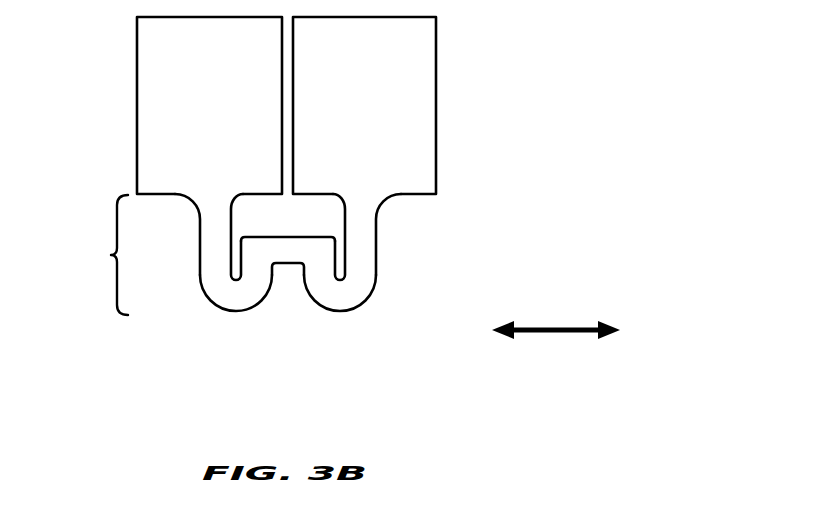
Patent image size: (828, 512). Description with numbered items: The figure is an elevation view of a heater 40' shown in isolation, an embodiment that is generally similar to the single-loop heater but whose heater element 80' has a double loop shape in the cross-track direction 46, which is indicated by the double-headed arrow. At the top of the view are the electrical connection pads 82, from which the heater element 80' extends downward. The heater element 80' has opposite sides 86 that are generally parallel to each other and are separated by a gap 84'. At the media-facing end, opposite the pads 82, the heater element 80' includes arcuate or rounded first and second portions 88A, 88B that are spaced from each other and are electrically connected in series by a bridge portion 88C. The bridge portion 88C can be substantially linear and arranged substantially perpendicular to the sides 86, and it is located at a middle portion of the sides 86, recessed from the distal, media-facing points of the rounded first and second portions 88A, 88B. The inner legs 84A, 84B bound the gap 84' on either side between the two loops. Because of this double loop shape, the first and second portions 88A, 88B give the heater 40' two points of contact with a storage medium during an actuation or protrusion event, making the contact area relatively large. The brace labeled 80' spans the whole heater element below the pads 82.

The electrical connection pads 82 is at (221, 124).
The opposite sides 86 is at (199, 238).
The first portion 88A is at (226, 312).
The second portion 88B is at (343, 311).
The bridge portion 88C is at (280, 264).
The first inner leg 84A is at (233, 263).
The second inner leg 84B is at (343, 263).
The gap 84' is at (379, 207).
The heater element 80' is at (79, 255).
The cross-track direction 46 is at (545, 327).
The heater 40' is at (686, 112).